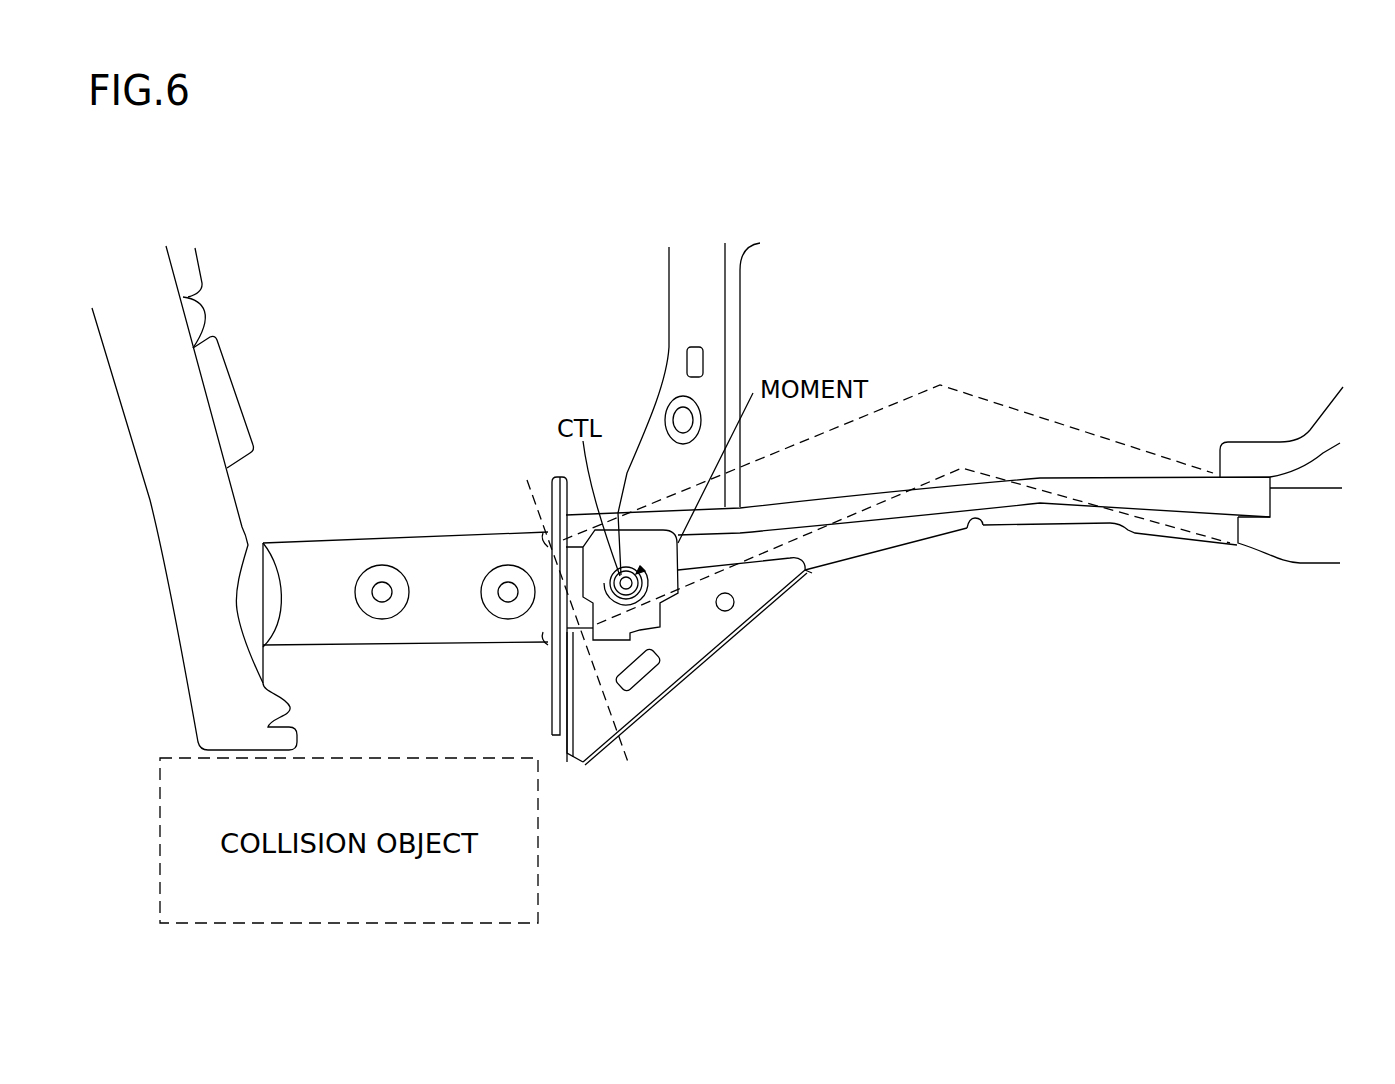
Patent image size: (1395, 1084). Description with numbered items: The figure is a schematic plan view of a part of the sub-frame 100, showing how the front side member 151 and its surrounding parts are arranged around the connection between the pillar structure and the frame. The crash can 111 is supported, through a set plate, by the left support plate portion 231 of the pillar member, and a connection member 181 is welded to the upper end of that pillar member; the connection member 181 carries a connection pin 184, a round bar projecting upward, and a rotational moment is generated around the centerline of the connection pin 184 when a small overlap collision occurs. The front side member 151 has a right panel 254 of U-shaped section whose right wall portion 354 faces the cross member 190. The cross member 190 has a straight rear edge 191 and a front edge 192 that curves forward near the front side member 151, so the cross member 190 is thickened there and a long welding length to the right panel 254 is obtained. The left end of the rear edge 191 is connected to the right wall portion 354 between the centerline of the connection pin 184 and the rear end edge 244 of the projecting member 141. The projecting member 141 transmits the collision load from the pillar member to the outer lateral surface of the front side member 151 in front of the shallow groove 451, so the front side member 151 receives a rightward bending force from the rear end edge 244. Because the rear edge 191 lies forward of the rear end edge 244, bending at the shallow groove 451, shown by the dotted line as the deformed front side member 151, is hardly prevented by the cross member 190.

The sub-frame 100 is at (1128, 237).
The crash can 111 is at (340, 557).
The projecting member 141 is at (700, 675).
The front side member 151 is at (940, 550).
The connection member 181 is at (590, 567).
The connection pin 184 is at (620, 605).
The cross member 190 is at (695, 409).
The rear edge 191 is at (740, 348).
The front edge 192 is at (668, 315).
The left support plate portion 231 is at (567, 765).
The rear end edge 244 is at (808, 572).
The right panel 254 is at (902, 508).
The right wall portion 354 is at (765, 503).
The shallow groove 451 is at (973, 527).